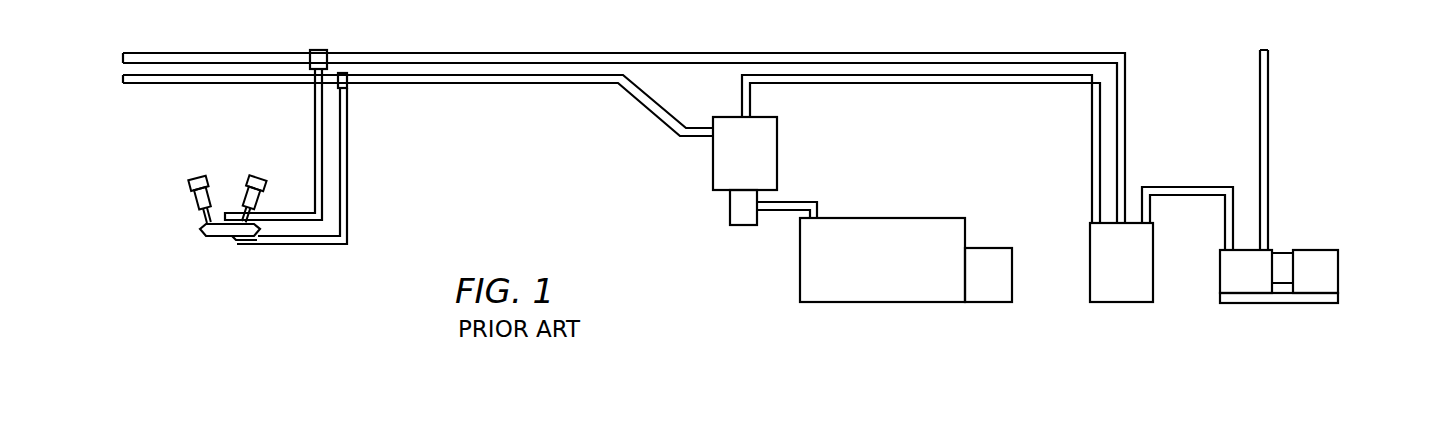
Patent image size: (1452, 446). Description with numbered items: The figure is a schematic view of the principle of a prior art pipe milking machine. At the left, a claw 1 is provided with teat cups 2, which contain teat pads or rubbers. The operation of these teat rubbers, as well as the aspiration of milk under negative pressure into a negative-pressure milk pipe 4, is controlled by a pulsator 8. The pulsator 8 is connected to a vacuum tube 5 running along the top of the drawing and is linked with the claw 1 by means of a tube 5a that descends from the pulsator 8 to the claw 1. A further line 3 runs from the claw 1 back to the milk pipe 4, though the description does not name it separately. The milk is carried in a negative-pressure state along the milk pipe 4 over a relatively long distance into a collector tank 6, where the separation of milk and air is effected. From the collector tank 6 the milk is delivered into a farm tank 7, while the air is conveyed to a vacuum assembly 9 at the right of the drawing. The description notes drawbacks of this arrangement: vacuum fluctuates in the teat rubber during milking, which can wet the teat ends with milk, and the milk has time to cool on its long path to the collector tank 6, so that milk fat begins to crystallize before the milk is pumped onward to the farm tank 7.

The claw 1 is at (220, 236).
The teat cups 2 is at (250, 176).
The return pipe 3 is at (347, 179).
The negative-pressure milk pipe 4 is at (493, 83).
The vacuum tube 5 is at (685, 58).
The tube 5a is at (315, 130).
The collector tank 6 is at (762, 150).
The farm tank 7 is at (888, 290).
The pulsator 8 is at (317, 55).
The vacuum assembly 9 is at (1185, 280).